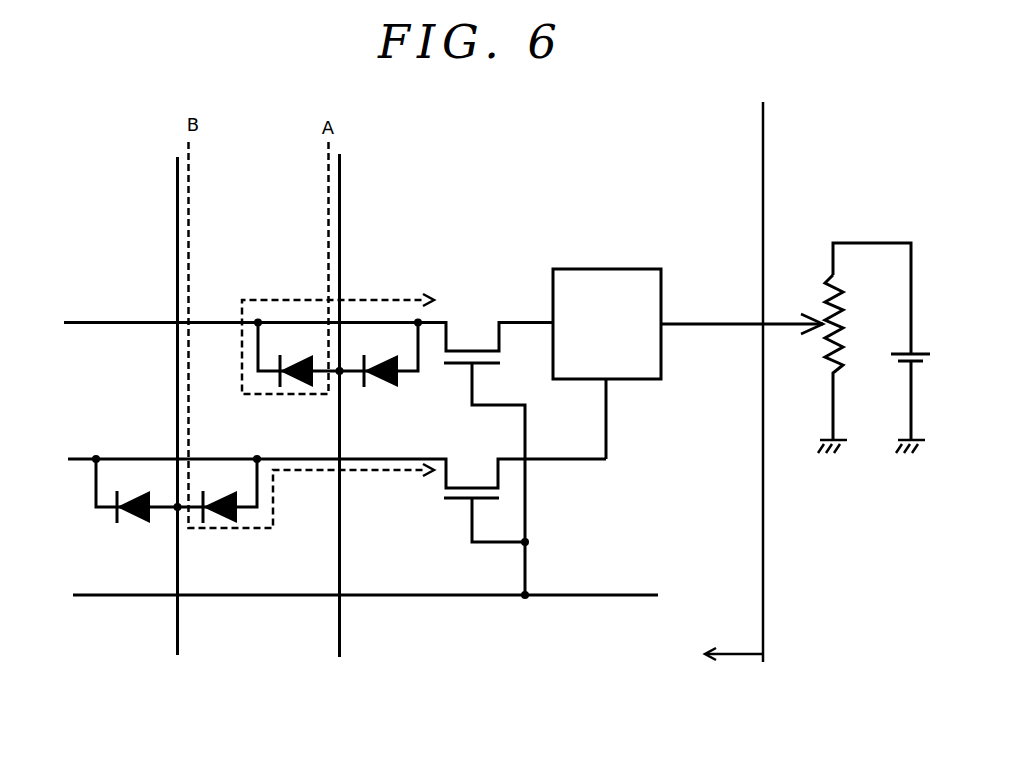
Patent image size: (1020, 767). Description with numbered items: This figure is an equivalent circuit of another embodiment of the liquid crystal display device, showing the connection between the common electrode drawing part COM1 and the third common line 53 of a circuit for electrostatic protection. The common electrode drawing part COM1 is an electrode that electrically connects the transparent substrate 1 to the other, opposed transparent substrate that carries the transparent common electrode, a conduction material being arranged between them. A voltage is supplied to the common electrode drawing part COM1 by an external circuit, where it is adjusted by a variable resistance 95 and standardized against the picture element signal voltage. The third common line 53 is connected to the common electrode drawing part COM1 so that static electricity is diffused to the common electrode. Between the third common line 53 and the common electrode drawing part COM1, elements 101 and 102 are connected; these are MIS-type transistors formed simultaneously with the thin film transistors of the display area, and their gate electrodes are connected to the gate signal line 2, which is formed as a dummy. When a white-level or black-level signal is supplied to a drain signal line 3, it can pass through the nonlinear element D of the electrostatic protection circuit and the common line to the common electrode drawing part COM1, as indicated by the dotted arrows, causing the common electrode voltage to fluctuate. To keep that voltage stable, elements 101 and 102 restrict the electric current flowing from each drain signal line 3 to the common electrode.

The transparent substrate 1 is at (656, 413).
The gate signal line 2 is at (83, 575).
The drain signal line 3 is at (177, 196).
The third common line 53 is at (100, 320).
The variable resistance 95 is at (821, 356).
The element 101 is at (471, 330).
The element 102 is at (462, 508).
The nonlinear element D is at (382, 357).
The common electrode drawing part COM1 is at (600, 268).